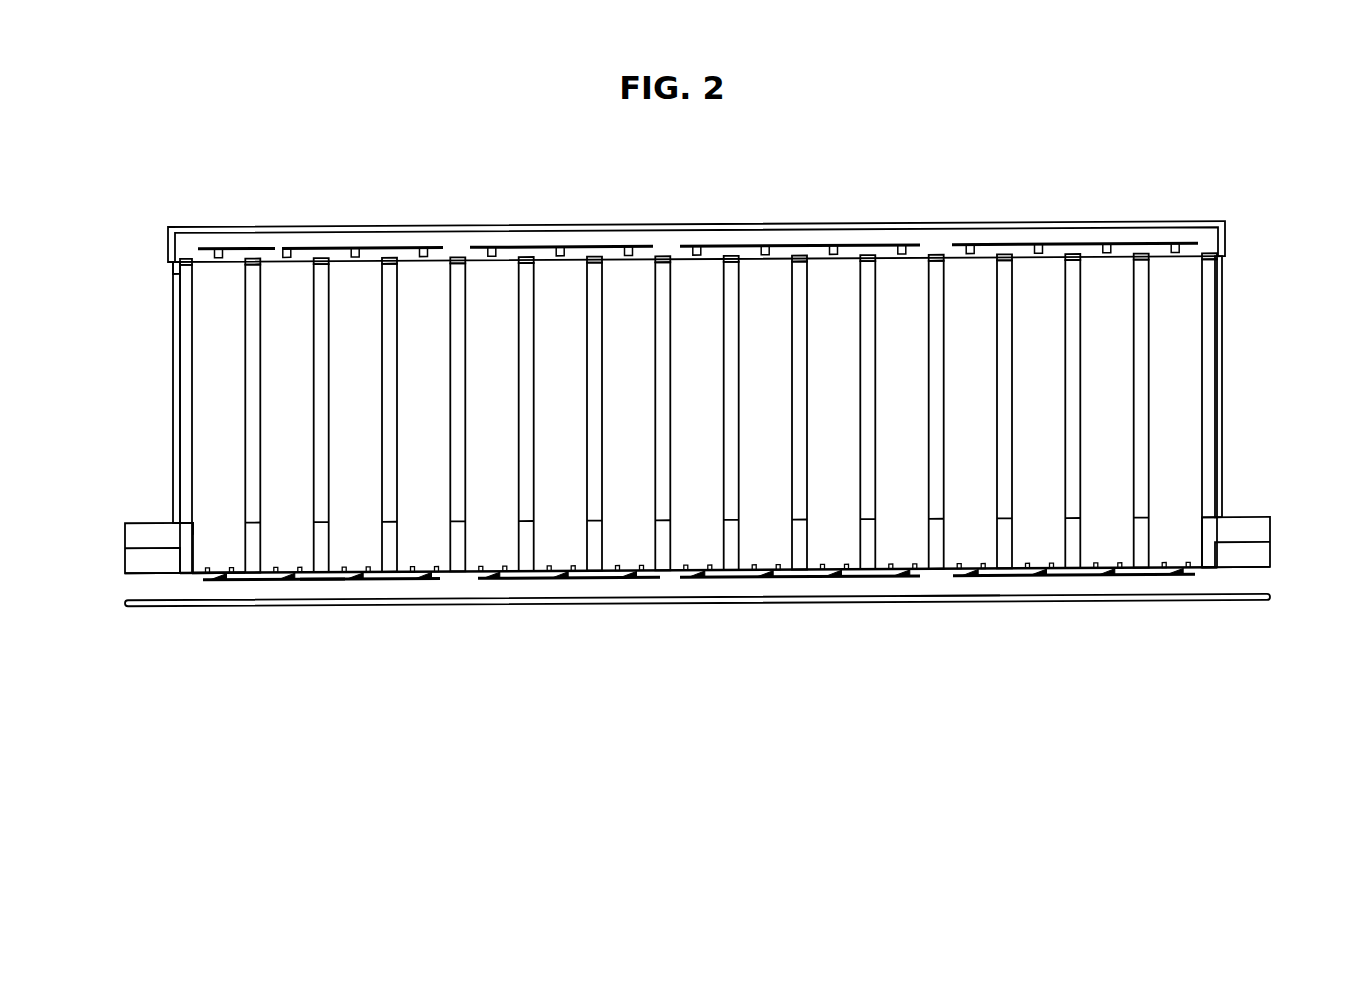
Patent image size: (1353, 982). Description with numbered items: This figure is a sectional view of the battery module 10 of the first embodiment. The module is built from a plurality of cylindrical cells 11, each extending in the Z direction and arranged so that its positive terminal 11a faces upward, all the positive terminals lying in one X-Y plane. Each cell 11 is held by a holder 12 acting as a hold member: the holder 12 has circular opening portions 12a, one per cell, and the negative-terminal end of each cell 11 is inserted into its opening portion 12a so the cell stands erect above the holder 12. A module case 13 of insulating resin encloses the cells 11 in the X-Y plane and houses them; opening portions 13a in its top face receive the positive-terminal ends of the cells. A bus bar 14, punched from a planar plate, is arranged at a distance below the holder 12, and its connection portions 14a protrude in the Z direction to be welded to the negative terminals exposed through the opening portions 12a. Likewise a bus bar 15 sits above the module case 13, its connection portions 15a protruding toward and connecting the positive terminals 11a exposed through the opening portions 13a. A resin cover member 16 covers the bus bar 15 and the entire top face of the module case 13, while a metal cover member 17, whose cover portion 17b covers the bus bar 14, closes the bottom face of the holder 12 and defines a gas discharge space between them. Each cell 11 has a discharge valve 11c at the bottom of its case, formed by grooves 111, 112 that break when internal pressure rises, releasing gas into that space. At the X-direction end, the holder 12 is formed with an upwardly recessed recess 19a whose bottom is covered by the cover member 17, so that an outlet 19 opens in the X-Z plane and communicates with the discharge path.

The battery module 10 is at (1142, 209).
The cells 11 is at (698, 416).
The positive terminals 11a is at (698, 259).
The discharge valve 11c is at (698, 567).
The groove 111 is at (686, 568).
The groove 112 is at (710, 567).
The holder 12 is at (697, 545).
The opening portions 12a is at (183, 529).
The module case 13 is at (697, 389).
The opening portions 13a is at (176, 268).
The bus bar 14 is at (699, 576).
The connection portions 14a is at (697, 573).
The bus bar 15 is at (698, 246).
The connection portions 15a is at (697, 250).
The cover member 16 is at (696, 241).
The cover member 17 is at (697, 600).
The cover portion 17b is at (950, 595).
The outlet 19 is at (697, 570).
The recess 19a is at (697, 557).